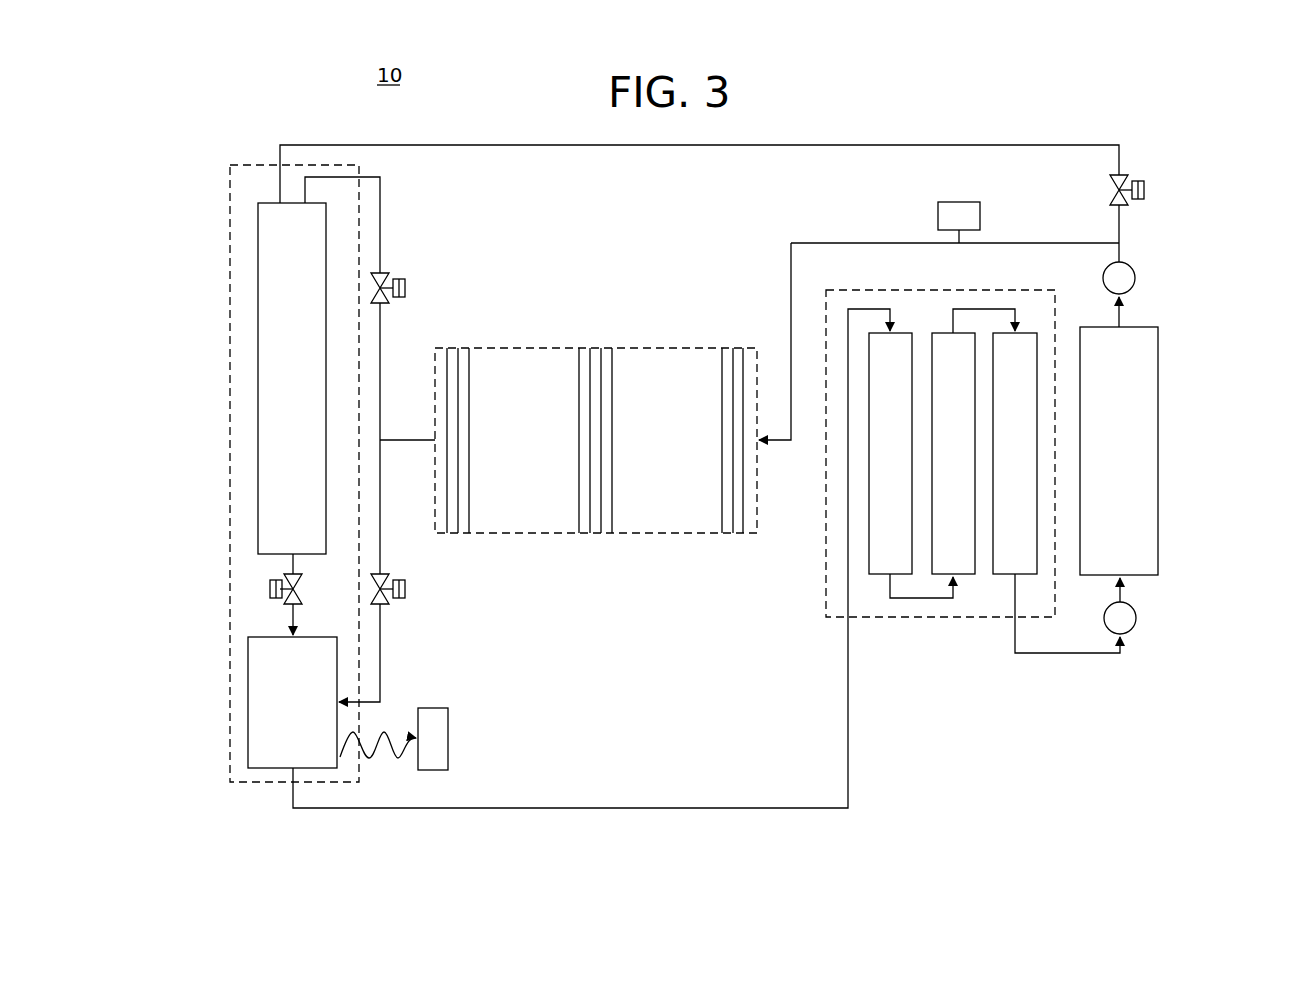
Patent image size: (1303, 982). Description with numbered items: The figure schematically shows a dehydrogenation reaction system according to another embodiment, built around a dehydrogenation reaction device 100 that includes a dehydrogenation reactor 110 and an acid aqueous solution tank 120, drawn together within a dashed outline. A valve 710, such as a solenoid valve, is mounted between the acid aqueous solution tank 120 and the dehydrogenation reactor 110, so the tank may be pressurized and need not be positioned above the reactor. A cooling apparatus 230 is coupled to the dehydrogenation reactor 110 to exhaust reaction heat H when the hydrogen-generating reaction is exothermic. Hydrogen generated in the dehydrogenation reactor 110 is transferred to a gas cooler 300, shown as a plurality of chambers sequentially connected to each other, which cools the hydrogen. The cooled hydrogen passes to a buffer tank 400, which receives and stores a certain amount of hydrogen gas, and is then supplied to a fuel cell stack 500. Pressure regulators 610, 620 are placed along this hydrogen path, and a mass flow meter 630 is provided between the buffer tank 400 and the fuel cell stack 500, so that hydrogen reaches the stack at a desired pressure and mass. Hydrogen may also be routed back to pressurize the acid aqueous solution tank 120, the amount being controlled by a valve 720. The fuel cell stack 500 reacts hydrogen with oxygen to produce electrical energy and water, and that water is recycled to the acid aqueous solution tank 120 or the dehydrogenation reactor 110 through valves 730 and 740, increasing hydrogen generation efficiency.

The dehydrogenation reaction device 100 is at (233, 163).
The dehydrogenation reactor 110 is at (246, 697).
The acid aqueous solution tank 120 is at (257, 385).
The cooling apparatus 230 is at (433, 706).
The gas cooler 300 is at (937, 622).
The buffer tank 400 is at (1162, 442).
The fuel cell stack 500 is at (598, 340).
The pressure regulator 610 is at (1143, 607).
The pressure regulator 620 is at (1143, 270).
The mass flow meter 630 is at (985, 202).
The valve 710 is at (266, 589).
The valve 720 is at (1150, 178).
The valve 730 is at (408, 589).
The valve 740 is at (408, 287).